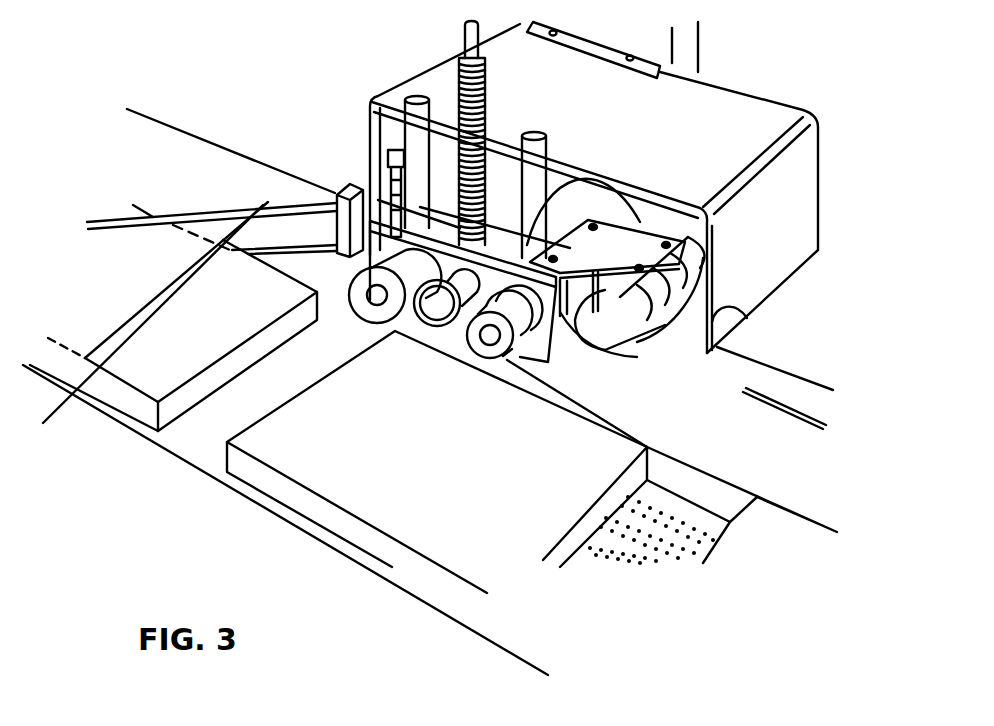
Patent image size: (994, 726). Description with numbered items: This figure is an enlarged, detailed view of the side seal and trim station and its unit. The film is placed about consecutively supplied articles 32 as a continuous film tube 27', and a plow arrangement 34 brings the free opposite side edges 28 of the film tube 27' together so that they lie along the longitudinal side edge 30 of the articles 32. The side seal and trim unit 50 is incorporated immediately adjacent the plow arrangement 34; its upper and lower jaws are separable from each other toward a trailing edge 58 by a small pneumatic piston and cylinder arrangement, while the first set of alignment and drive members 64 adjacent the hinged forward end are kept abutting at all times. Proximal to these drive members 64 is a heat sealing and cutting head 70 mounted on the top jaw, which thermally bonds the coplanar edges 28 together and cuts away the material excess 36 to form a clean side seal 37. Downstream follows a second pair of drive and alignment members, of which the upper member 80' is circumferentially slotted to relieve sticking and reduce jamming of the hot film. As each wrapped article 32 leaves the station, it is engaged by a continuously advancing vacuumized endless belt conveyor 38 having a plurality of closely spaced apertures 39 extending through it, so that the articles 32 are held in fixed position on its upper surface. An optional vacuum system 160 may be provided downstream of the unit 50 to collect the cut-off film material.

The film tube 27' is at (285, 438).
The free side edges 28 is at (337, 193).
The side edge 30 is at (583, 411).
The articles 32 is at (437, 478).
The plow arrangement 34 is at (273, 210).
The material excess 36 is at (560, 283).
The side seal 37 is at (678, 448).
The vacuumized endless belt conveyor 38 is at (690, 502).
The apertures 39 is at (678, 547).
The side seal and trim unit 50 is at (430, 335).
The trailing edge 58 is at (615, 355).
The first set of alignment and drive members 64 is at (372, 325).
The heat sealing and cutting head 70 is at (580, 174).
The upper drive and alignment member 80' is at (504, 354).
The vacuum system 160 is at (747, 318).